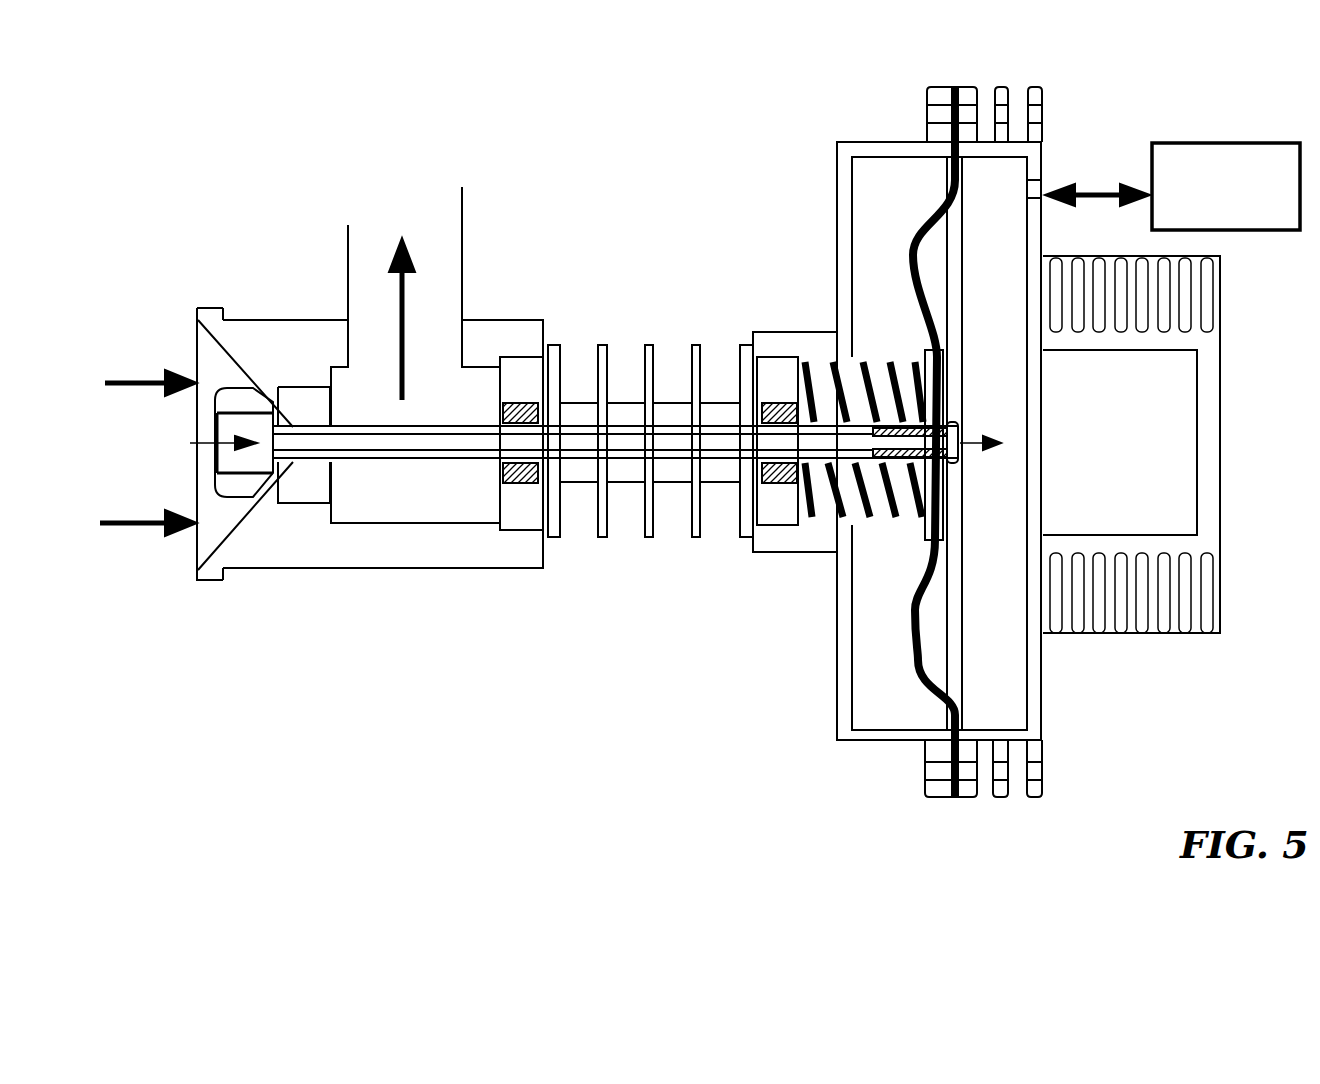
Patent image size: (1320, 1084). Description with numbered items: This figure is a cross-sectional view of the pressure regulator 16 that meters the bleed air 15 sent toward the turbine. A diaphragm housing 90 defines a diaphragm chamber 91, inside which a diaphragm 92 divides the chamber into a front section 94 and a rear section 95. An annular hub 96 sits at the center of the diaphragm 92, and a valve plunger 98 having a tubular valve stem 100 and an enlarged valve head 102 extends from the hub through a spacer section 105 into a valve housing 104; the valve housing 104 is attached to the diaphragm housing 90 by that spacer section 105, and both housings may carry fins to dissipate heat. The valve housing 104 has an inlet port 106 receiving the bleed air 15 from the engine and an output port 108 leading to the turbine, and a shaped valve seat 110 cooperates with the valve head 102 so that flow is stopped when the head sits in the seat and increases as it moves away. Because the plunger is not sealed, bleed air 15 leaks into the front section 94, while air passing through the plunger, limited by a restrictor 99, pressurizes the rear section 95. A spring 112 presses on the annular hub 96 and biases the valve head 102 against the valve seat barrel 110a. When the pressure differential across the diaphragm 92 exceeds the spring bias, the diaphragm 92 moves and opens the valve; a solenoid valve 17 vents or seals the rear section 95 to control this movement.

The bleed air 15 is at (152, 517).
The pressure regulator 16 is at (596, 246).
The solenoid valve 17 is at (1250, 143).
The diaphragm housing 90 is at (868, 142).
The diaphragm chamber 91 is at (877, 773).
The diaphragm 92 is at (910, 645).
The front section 94 is at (882, 613).
The rear section 95 is at (990, 580).
The annular hub 96 is at (948, 508).
The valve plunger 98 is at (413, 462).
The restrictor 99 is at (957, 432).
The tubular valve stem 100 is at (453, 443).
The valve head 102 is at (242, 497).
The valve housing 104 is at (247, 318).
The spacer section 105 is at (735, 323).
The inlet port 106 is at (197, 367).
The output port 108 is at (432, 345).
The valve seat 110 is at (262, 368).
The valve seat barrel 110a is at (303, 503).
The spring 112 is at (822, 510).